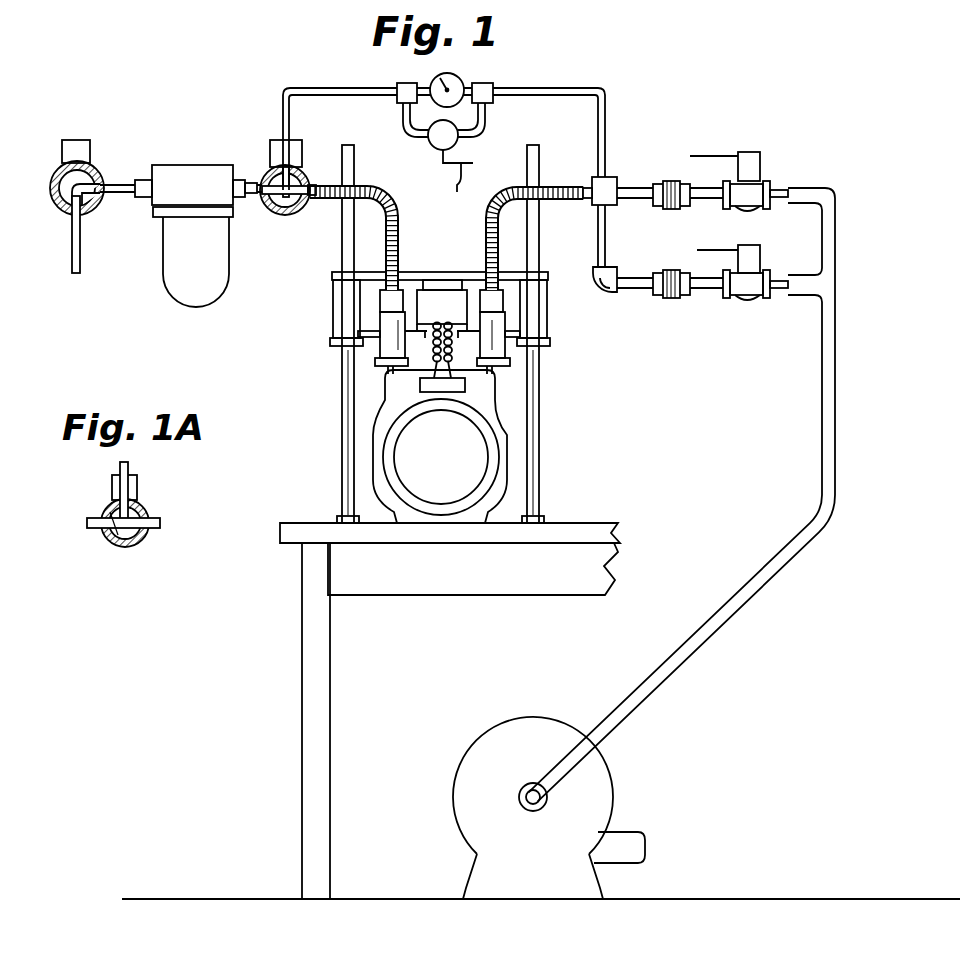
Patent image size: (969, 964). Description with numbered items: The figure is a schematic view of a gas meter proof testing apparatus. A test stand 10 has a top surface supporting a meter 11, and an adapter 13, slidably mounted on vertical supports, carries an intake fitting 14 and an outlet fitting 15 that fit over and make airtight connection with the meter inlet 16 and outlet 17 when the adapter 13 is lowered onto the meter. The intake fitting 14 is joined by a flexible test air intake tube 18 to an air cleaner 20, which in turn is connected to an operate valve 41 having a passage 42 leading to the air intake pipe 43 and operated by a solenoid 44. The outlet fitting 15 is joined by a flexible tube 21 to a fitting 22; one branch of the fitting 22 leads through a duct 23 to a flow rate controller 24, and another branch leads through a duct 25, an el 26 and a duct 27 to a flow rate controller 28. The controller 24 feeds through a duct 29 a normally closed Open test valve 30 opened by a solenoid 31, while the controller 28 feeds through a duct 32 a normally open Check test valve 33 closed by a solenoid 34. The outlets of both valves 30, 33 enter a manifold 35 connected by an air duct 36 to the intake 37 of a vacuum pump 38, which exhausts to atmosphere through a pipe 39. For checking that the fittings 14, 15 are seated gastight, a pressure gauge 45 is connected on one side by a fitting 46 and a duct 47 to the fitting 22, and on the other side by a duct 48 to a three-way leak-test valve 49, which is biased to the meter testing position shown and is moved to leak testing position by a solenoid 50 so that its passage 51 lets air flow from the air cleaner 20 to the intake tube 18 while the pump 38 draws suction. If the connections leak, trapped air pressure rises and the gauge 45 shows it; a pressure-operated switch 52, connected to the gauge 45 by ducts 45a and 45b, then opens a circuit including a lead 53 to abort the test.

In FIG. 1, the test stand 10 is at (295, 523).
In FIG. 1, the meter 11 is at (470, 460).
In FIG. 1, the adapter 13 is at (430, 272).
In FIG. 1, the intake fitting 14 is at (385, 342).
In FIG. 1, the outlet fitting 15 is at (505, 345).
In FIG. 1, the inlet 16 is at (388, 368).
In FIG. 1, the outlet 17 is at (500, 368).
In FIG. 1, the flexible test air intake tube 18 is at (400, 238).
In FIG. 1, the air cleaner 20 is at (210, 290).
In FIG. 1, the flexible tube 21 is at (484, 226).
In FIG. 1, the fitting 22 is at (590, 178).
In FIG. 1, the duct 23 is at (623, 188).
In FIG. 1, the flow rate controller 24 is at (672, 182).
In FIG. 1, the duct 25 is at (604, 247).
In FIG. 1, the el 26 is at (595, 288).
In FIG. 1, the duct 27 is at (633, 290).
In FIG. 1, the flow rate controller 28 is at (672, 298).
In FIG. 1, the duct 29 is at (716, 200).
In FIG. 1, the Open test valve 30 is at (748, 206).
In FIG. 1, the solenoid 31 is at (752, 166).
In FIG. 1, the duct 32 is at (705, 290).
In FIG. 1, the Check test valve 33 is at (745, 298).
In FIG. 1, the solenoid 34 is at (752, 266).
In FIG. 1, the manifold 35 is at (836, 256).
In FIG. 1, the air duct 36 is at (783, 570).
In FIG. 1, the intake 37 is at (536, 812).
In FIG. 1, the vacuum pump 38 is at (544, 802).
In FIG. 1, the pipe 39 is at (625, 834).
In FIG. 1, the operate valve 41 is at (59, 166).
In FIG. 1, the passage 42 is at (58, 203).
In FIG. 1, the air intake pipe 43 is at (80, 265).
In FIG. 1, the solenoid 44 is at (70, 140).
In FIG. 1, the pressure gauge 45 is at (433, 80).
In FIG. 1, the duct 45a is at (403, 118).
In FIG. 1, the duct 45b is at (488, 118).
In FIG. 1, the fitting 46 is at (494, 83).
In FIG. 1, the duct 47 is at (574, 88).
In FIG. 1, the duct 48 is at (300, 88).
In FIG. 1, the three-way leak-test valve 49 is at (278, 177).
In FIG. 1A, the three-way leak-test valve 49 is at (107, 539).
In FIG. 1, the solenoid 50 is at (300, 142).
In FIG. 1A, the solenoid 50 is at (137, 492).
In FIG. 1, the passage 51 is at (280, 212).
In FIG. 1A, the passage 51 is at (105, 534).
In FIG. 1, the pressure-operated switch 52 is at (432, 142).
In FIG. 1, the lead 53 is at (444, 181).